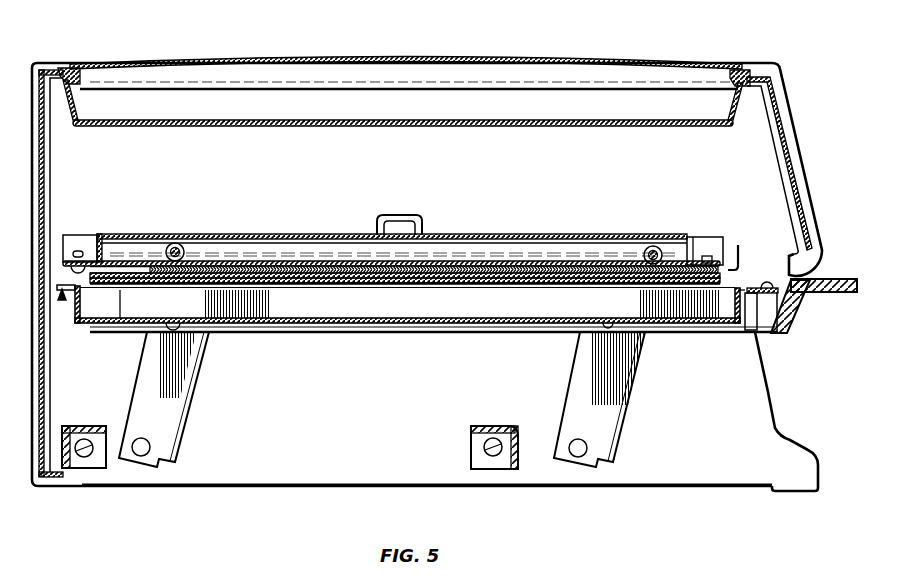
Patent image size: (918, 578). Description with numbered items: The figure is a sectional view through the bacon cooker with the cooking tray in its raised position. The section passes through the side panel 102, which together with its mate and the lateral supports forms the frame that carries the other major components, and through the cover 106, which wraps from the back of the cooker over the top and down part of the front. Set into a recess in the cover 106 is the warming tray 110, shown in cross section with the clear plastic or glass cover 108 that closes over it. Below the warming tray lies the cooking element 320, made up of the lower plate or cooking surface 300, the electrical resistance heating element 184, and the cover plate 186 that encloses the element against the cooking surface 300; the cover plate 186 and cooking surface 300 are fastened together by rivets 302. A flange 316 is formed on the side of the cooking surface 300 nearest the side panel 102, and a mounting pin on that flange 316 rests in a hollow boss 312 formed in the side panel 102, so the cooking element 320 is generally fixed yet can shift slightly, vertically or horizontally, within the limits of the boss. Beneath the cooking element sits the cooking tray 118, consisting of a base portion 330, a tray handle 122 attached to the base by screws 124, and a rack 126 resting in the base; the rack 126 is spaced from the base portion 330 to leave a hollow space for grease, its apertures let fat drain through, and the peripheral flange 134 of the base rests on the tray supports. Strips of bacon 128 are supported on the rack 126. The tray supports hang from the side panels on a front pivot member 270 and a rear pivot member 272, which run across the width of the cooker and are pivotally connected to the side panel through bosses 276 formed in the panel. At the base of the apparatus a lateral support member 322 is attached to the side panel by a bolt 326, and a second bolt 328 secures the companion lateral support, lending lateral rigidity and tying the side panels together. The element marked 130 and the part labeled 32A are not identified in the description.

The side panel 102 is at (746, 178).
The cover 106 is at (781, 108).
The clear plastic or glass cover 108 is at (592, 62).
The warming tray 110 is at (314, 120).
The cooking tray 118 is at (811, 296).
The tray handle 122 is at (842, 277).
The screws 124 is at (769, 279).
The rack 126 is at (339, 296).
The strips of bacon 128 is at (144, 256).
The ribbon 130 is at (499, 262).
The peripheral flange 134 is at (62, 302).
The electrical resistance heating element 184 is at (222, 255).
The cover plate 186 is at (295, 248).
The cooking surface 300 is at (682, 243).
The rivets 302 is at (88, 250).
The hollow boss 312 is at (422, 216).
The flange 316 is at (707, 242).
The cooking element 320 is at (533, 230).
The lateral support member 322 is at (488, 423).
The bolt 326 is at (471, 449).
The bolt 328 is at (82, 468).
The mounting block 32A is at (80, 425).
The base portion 330 is at (406, 330).
The front pivot member 270 is at (620, 405).
The rear pivot member 272 is at (163, 421).
The bosses 276 is at (152, 466).